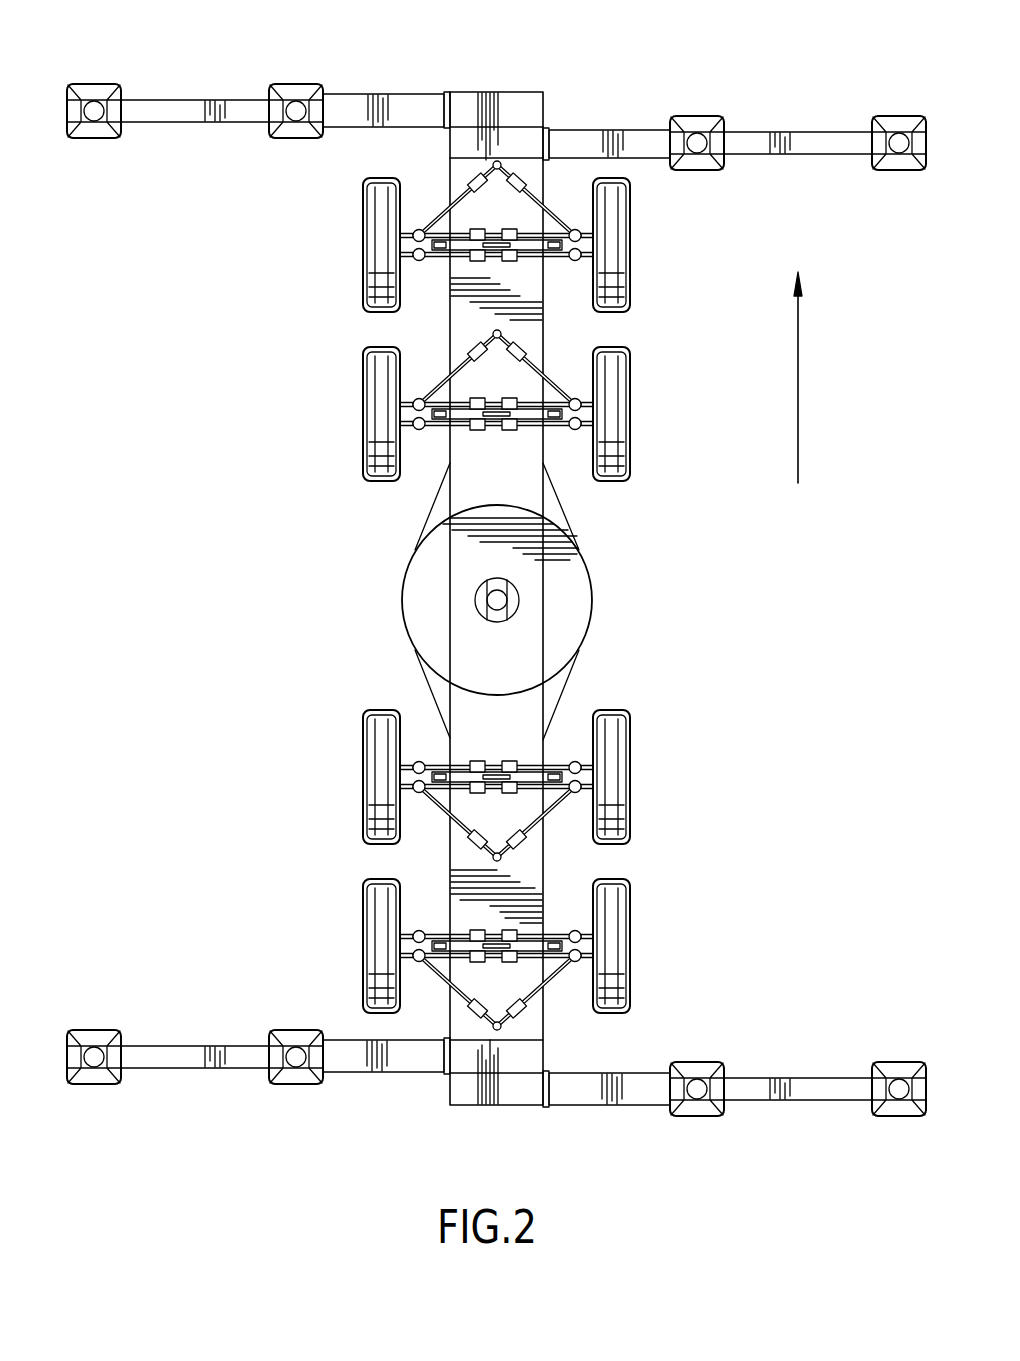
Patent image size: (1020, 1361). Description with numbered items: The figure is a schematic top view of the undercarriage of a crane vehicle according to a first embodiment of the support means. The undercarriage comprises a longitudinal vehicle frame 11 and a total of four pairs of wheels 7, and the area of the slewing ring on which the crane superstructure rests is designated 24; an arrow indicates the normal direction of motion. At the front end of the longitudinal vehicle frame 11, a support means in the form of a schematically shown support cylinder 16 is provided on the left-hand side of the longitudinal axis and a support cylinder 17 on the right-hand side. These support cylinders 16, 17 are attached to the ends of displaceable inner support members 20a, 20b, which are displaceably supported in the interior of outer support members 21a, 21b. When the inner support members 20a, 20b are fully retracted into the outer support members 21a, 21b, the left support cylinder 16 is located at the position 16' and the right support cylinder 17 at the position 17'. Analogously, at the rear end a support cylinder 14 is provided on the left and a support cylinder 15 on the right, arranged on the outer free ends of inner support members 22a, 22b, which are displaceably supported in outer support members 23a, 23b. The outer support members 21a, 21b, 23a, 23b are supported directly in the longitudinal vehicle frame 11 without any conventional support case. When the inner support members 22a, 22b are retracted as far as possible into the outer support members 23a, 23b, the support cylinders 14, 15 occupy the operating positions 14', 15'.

The pairs of wheels 7 is at (623, 240).
The longitudinal vehicle frame 11 is at (513, 472).
The support cylinder 14 is at (94, 998).
The operating position of support cylinder 14 14' is at (295, 998).
The support cylinder 15 is at (897, 1041).
The operating position of support cylinder 15 15' is at (697, 1030).
The support cylinder 16 is at (96, 159).
The position of support cylinder 16 16' is at (287, 159).
The support cylinder 17 is at (895, 198).
The position of support cylinder 17 17' is at (699, 104).
The inner support member 20a is at (172, 102).
The inner support member 20b is at (832, 140).
The outer support member 21a is at (403, 107).
The outer support member 21b is at (583, 140).
The inner support member 22a is at (172, 1053).
The inner support member 22b is at (807, 1073).
The outer support member 23a is at (418, 1060).
The outer support member 23b is at (573, 1090).
The slewing ring area 24 is at (590, 610).